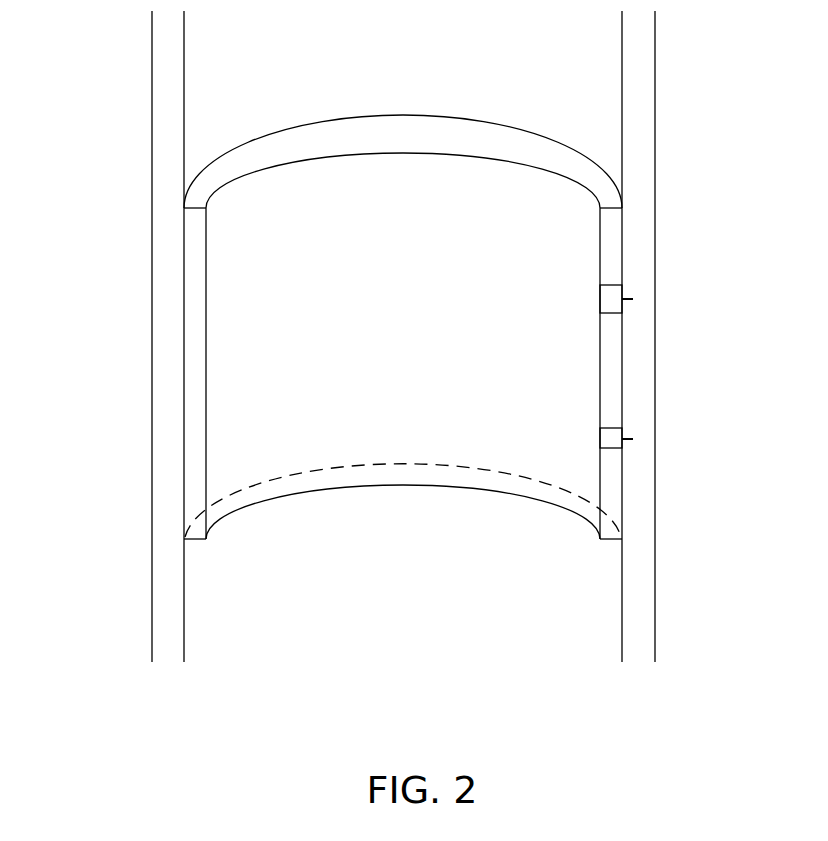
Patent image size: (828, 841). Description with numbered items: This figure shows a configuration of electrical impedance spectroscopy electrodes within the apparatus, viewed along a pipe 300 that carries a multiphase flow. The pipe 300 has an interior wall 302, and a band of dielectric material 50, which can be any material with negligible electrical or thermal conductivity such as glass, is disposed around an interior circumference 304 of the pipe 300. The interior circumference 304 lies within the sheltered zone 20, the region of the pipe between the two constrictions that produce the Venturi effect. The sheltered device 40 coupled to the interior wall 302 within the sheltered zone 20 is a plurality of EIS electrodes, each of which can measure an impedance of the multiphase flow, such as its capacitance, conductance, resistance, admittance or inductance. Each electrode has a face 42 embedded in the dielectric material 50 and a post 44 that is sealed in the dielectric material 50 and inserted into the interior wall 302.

The sheltered zone 20 is at (421, 53).
The sheltered device 40 is at (612, 283).
The face 42 is at (581, 300).
The post 44 is at (629, 303).
The dielectric material 50 is at (383, 320).
The pipe 300 is at (138, 600).
The interior wall 302 is at (614, 633).
The interior circumference 304 is at (622, 562).